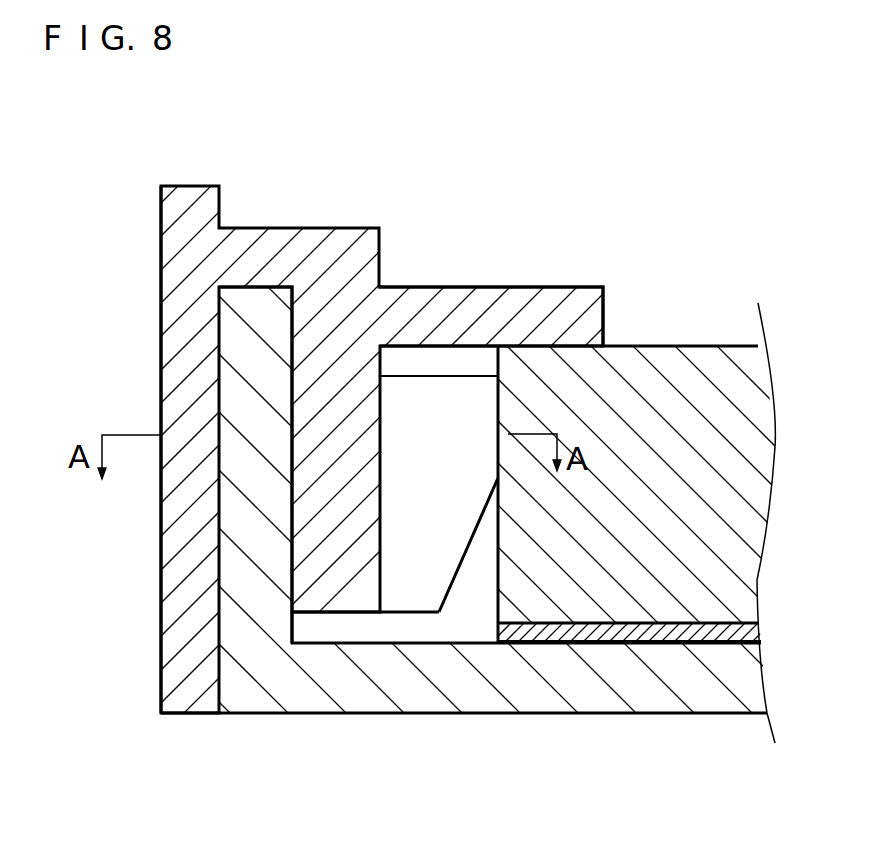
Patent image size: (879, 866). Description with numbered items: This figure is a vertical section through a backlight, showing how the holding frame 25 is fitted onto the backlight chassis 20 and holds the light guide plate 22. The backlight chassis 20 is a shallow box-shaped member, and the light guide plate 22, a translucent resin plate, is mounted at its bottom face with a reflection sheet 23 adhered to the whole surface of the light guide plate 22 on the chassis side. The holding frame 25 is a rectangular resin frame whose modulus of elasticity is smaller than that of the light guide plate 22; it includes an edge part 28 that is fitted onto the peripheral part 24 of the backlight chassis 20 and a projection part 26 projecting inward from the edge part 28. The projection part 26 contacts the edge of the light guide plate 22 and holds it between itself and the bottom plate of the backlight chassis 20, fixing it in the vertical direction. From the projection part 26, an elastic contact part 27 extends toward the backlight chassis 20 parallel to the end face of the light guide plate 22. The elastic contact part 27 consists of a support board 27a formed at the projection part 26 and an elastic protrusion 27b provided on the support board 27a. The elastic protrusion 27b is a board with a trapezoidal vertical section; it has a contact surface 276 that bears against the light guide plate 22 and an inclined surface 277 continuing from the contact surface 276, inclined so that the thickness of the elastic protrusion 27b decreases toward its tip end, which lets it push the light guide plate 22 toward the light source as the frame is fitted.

The backlight chassis 20 is at (605, 713).
The light guide plate 22 is at (673, 347).
The reflection sheet 23 is at (558, 638).
The peripheral part 24 is at (292, 628).
The holding frame 25 is at (320, 207).
The projection part 26 is at (593, 287).
The elastic contact part 27 is at (373, 613).
The support board 27a is at (328, 613).
The elastic protrusion 27b is at (402, 385).
The edge part 28 is at (161, 319).
The contact surface 276 is at (498, 398).
The inclined surface 277 is at (456, 573).